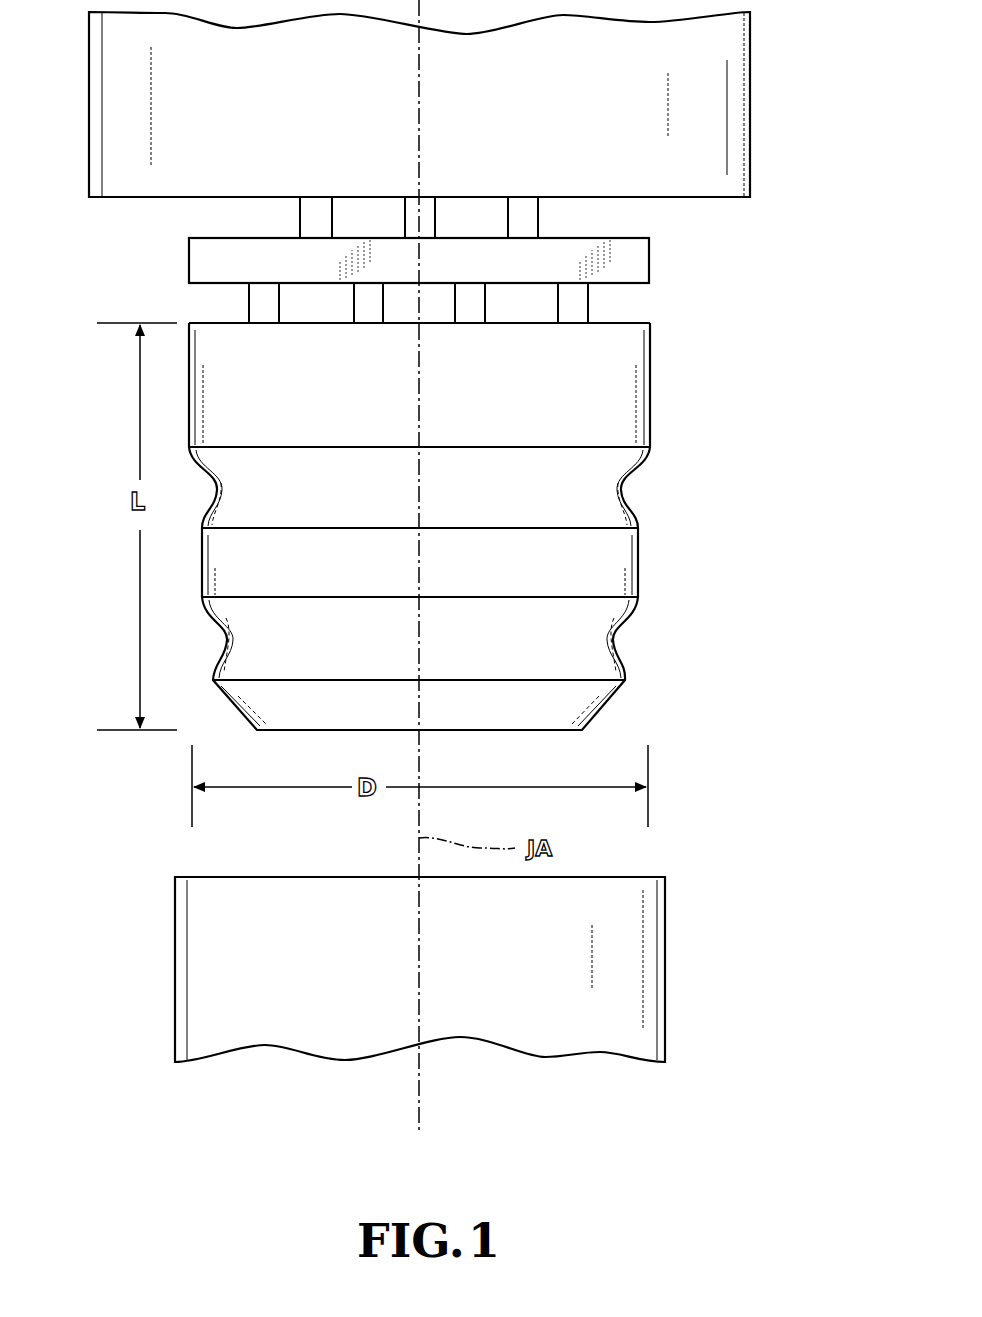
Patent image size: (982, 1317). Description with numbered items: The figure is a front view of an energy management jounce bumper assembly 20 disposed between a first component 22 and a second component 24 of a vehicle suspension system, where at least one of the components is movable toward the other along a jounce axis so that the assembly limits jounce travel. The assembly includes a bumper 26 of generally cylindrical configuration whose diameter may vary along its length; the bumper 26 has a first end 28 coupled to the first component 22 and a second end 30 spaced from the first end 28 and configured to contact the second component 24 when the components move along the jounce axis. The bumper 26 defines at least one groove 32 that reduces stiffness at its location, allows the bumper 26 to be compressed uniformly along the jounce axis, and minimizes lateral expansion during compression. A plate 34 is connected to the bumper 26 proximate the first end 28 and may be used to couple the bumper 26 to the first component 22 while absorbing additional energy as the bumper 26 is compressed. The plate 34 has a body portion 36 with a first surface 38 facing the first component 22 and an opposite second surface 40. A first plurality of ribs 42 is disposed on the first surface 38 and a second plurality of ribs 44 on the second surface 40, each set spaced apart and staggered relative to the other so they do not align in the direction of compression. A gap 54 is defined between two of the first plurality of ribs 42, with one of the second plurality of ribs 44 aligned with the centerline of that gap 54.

The energy management jounce bumper assembly 20 is at (492, 517).
The first component 22 is at (718, 112).
The second component 24 is at (632, 955).
The bumper 26 is at (628, 573).
The first end 28 is at (670, 317).
The second end 30 is at (640, 704).
The groove 32 is at (655, 636).
The plate 34 is at (412, 259).
The body portion 36 is at (203, 262).
The first surface 38 is at (208, 234).
The second surface 40 is at (210, 286).
The first plurality of ribs 42 is at (417, 210).
The second plurality of ribs 44 is at (372, 315).
The gap 54 is at (402, 227).